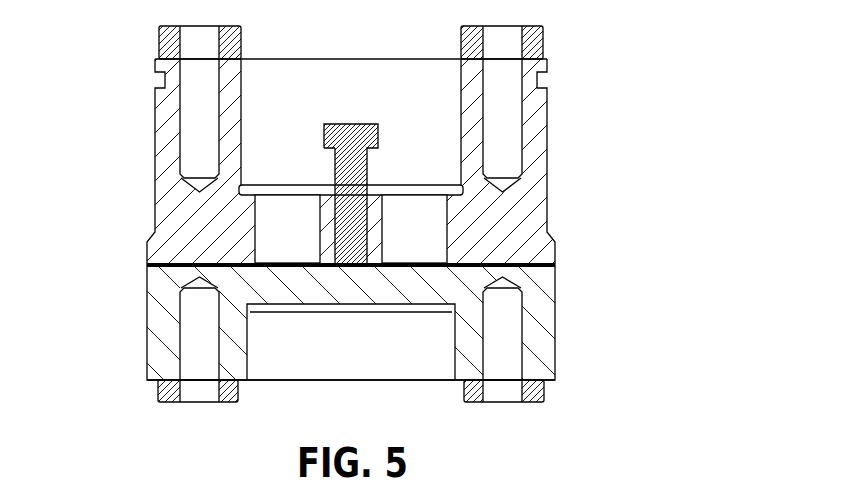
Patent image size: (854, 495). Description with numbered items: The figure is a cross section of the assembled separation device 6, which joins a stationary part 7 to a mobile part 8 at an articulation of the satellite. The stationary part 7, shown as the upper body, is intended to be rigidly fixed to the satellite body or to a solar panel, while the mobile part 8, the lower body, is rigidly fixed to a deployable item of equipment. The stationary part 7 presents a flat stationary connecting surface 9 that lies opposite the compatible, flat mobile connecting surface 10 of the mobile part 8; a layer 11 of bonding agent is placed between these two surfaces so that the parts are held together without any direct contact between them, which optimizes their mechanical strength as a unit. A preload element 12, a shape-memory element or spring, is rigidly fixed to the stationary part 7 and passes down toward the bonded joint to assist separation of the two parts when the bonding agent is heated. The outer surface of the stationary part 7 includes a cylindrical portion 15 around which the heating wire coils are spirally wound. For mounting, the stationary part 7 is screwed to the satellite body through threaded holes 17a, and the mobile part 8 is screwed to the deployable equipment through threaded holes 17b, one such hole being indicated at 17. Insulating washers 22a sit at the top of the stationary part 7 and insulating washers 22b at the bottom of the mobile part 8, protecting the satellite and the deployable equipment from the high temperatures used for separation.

The separation device 6 is at (655, 100).
The stationary part 7 is at (181, 222).
The mobile part 8 is at (542, 370).
The stationary connecting surface 9 is at (168, 266).
The mobile connecting surface 10 is at (503, 260).
The layer of bonding agent 11 is at (558, 263).
The preload element 12 is at (343, 124).
The cylindrical portion 15 is at (549, 167).
The bore 17 is at (523, 327).
The threaded holes 17a is at (180, 110).
The threaded holes 17b is at (179, 326).
The insulating washer 22a is at (159, 42).
The insulating washer 22b is at (172, 403).